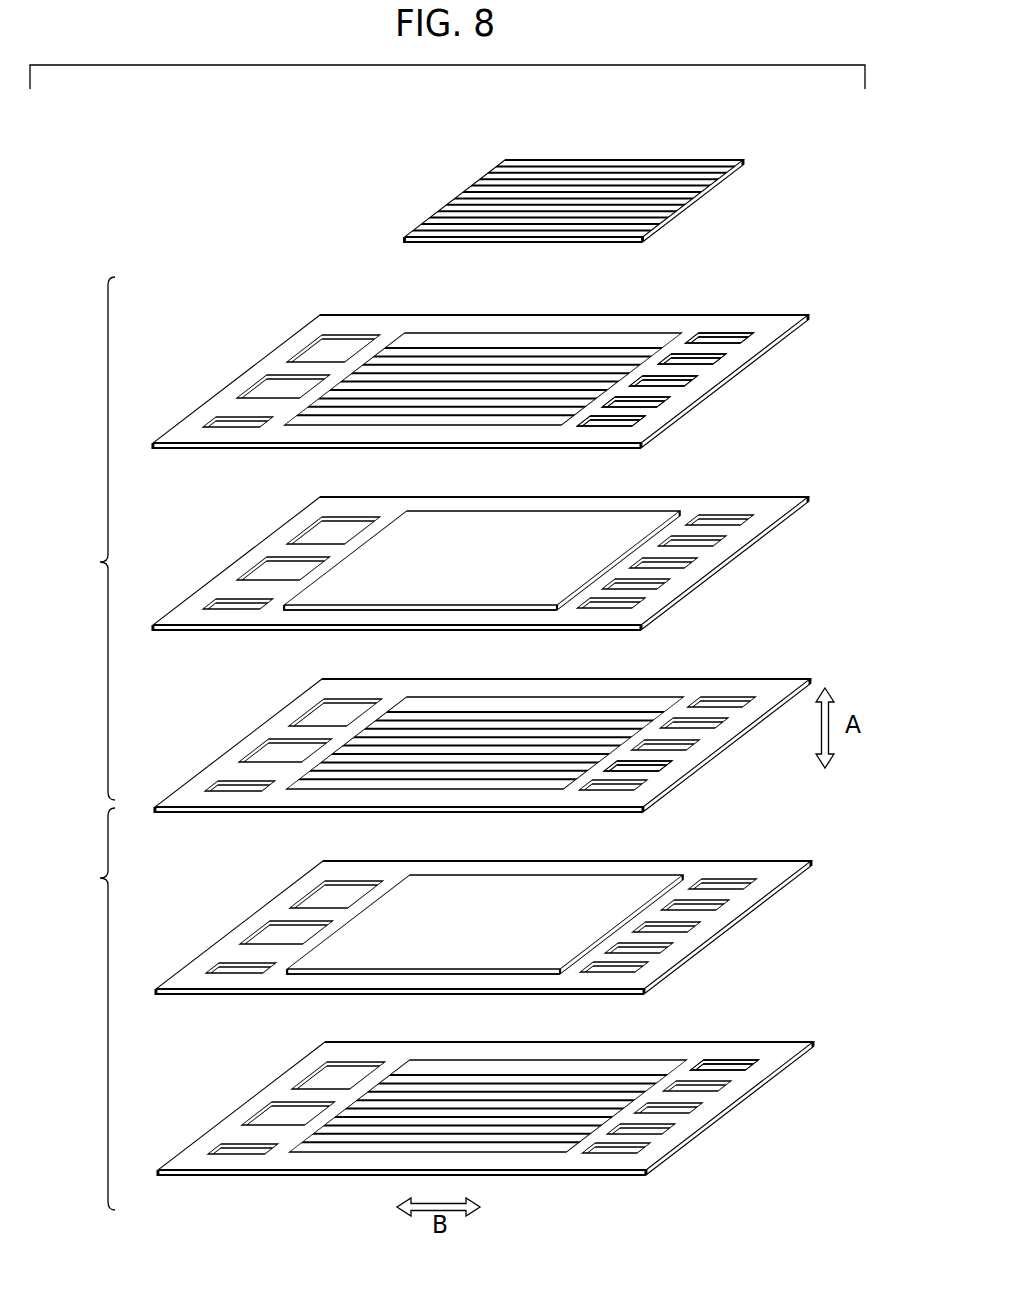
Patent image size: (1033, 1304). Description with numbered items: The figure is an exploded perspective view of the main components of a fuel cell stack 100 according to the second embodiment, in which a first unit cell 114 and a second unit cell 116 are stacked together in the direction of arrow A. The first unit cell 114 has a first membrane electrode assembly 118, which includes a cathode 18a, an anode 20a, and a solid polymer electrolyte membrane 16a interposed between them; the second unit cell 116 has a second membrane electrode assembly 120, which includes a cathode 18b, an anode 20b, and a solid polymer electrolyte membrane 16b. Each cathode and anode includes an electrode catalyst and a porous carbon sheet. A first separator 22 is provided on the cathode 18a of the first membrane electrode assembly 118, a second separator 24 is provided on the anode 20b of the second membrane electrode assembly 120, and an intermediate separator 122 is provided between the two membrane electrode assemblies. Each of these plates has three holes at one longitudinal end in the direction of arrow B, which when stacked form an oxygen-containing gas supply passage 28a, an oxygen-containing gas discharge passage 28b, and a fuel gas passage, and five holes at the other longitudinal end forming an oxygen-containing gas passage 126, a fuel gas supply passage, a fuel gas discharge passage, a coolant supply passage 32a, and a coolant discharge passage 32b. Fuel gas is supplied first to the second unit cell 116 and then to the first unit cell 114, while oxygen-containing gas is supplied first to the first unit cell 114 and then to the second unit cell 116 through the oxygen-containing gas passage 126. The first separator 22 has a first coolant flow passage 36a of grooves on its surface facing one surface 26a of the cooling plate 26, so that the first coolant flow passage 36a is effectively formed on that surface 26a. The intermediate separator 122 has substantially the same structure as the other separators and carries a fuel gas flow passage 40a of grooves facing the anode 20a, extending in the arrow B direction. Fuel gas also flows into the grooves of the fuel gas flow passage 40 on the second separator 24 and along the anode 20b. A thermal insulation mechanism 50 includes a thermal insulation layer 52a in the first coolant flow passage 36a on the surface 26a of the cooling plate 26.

The fuel cell stack 100 is at (250, 194).
The first unit cell 114 is at (83, 538).
The second unit cell 116 is at (83, 1009).
The cooling plate 26 is at (586, 198).
The one surface of the cooling plate 26a is at (703, 168).
The thermal insulation mechanism 50 is at (572, 180).
The thermal insulation layer 52a is at (592, 220).
The first separator 22 is at (501, 358).
The oxygen-containing gas supply passage 28a is at (322, 350).
The oxygen-containing gas discharge passage 28b is at (275, 388).
The first coolant flow passage 36a is at (497, 345).
The coolant discharge passage 32b is at (720, 357).
The coolant supply passage 32a is at (697, 379).
The oxygen-containing gas passage 126 is at (638, 420).
The first membrane electrode assembly 118 is at (507, 556).
The solid polymer electrolyte membrane 16a is at (673, 587).
The cathode 18a is at (500, 535).
The anode 20a is at (442, 587).
The intermediate separator 122 is at (508, 718).
The fuel gas flow passage 40a is at (488, 712).
The second membrane electrode assembly 120 is at (508, 923).
The solid polymer electrolyte membrane 16b is at (675, 947).
The cathode 18b is at (553, 888).
The anode 20b is at (467, 955).
The second separator 24 is at (509, 1080).
The fuel gas flow passage 40 is at (522, 1070).